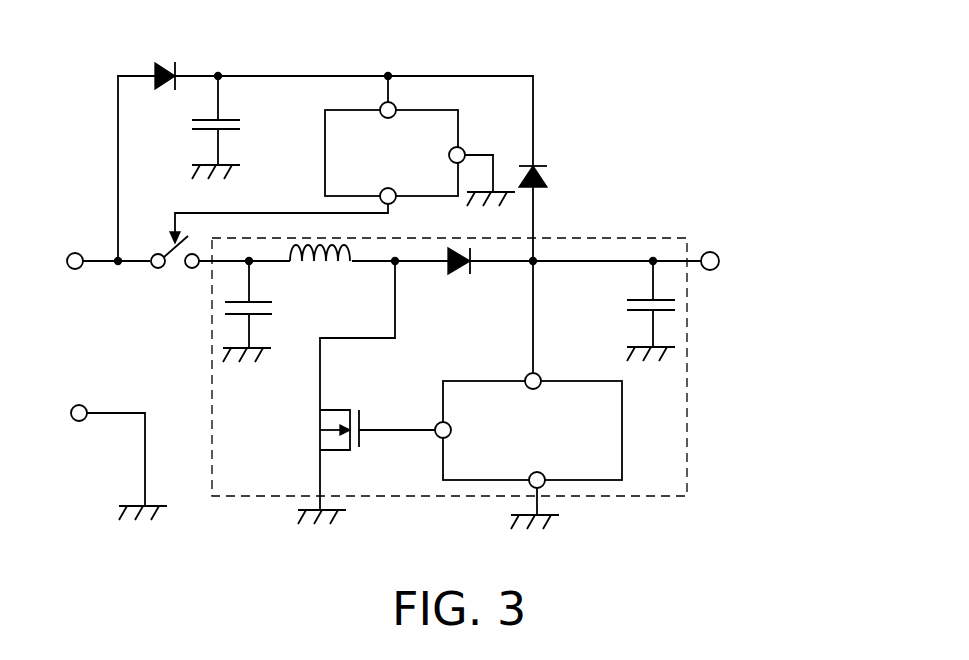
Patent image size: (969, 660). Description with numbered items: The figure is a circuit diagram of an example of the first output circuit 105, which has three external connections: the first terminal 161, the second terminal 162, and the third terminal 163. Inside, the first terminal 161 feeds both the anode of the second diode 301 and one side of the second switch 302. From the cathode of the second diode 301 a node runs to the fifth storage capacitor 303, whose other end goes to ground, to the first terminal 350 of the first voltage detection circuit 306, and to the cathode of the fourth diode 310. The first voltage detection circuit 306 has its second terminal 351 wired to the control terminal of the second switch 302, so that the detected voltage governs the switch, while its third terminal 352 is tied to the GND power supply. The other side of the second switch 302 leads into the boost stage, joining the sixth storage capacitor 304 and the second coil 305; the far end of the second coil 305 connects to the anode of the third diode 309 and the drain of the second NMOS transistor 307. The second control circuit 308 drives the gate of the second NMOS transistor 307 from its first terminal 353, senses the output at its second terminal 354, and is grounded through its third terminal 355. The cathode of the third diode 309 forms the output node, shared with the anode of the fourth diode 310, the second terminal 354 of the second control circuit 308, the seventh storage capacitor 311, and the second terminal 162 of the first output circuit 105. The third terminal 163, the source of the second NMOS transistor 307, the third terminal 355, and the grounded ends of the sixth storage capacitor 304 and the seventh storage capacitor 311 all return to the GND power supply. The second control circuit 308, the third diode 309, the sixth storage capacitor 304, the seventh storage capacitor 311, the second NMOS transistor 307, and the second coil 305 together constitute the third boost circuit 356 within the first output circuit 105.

The first output circuit 105 is at (600, 89).
The first terminal 161 is at (76, 270).
The second terminal 162 is at (716, 270).
The third terminal 163 is at (86, 420).
The second diode 301 is at (163, 90).
The second switch 302 is at (156, 270).
The fifth storage capacitor 303 is at (235, 130).
The sixth storage capacitor 304 is at (224, 306).
The second coil 305 is at (315, 280).
The first voltage detection circuit 306 is at (324, 122).
The second NMOS transistor 307 is at (345, 455).
The second control circuit 308 is at (464, 380).
The third diode 309 is at (462, 274).
The fourth diode 310 is at (546, 176).
The seventh storage capacitor 311 is at (626, 305).
The first terminal 350 is at (397, 106).
The second terminal 351 is at (395, 204).
The third terminal 352 is at (485, 140).
The first terminal 353 is at (440, 422).
The second terminal 354 is at (540, 372).
The third terminal 355 is at (546, 487).
The third boost circuit 356 is at (662, 238).